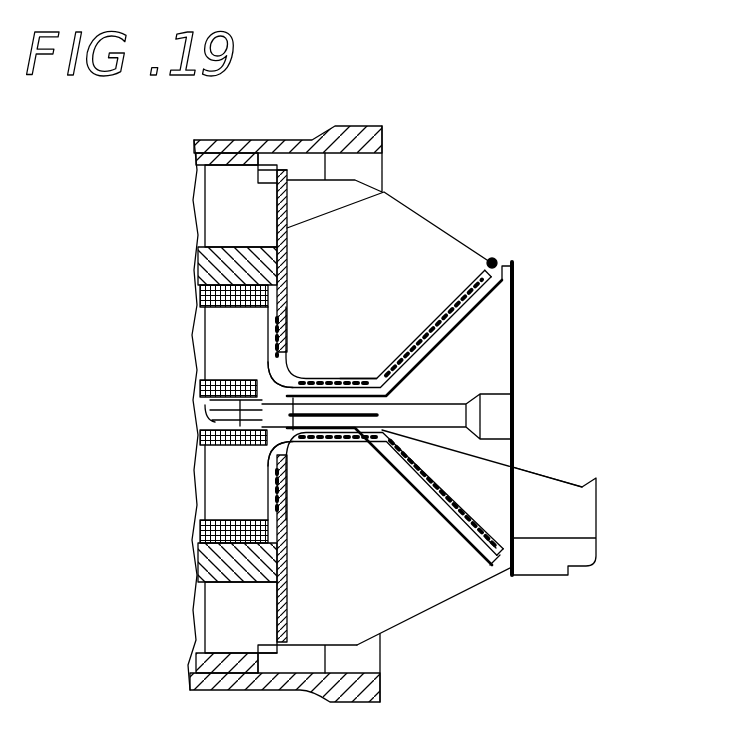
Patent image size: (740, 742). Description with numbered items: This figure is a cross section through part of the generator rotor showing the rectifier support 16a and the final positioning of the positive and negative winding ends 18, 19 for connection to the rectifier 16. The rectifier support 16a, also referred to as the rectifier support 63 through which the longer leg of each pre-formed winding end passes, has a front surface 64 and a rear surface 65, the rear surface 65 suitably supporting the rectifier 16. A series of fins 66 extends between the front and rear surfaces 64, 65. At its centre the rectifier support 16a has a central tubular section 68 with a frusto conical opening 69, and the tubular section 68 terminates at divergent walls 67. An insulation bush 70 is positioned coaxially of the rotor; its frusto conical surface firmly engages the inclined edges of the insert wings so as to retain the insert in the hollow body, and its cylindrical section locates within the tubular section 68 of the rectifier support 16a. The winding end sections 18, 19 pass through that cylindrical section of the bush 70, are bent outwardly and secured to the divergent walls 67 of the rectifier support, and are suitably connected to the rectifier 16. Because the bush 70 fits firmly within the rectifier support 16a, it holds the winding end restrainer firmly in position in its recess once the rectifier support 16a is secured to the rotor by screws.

The rectifier 16 is at (592, 547).
The rectifier support 16a is at (395, 248).
The positive winding end 18 is at (466, 316).
The negative winding end 19 is at (513, 470).
The rectifier support 63 is at (430, 222).
The front surface 64 is at (330, 198).
The rear surface 65 is at (515, 303).
The fins 66 is at (412, 583).
The divergent walls 67 is at (478, 551).
The central tubular section 68 is at (342, 378).
The frusto conical opening 69 is at (303, 373).
The insulation bush 70 is at (305, 448).